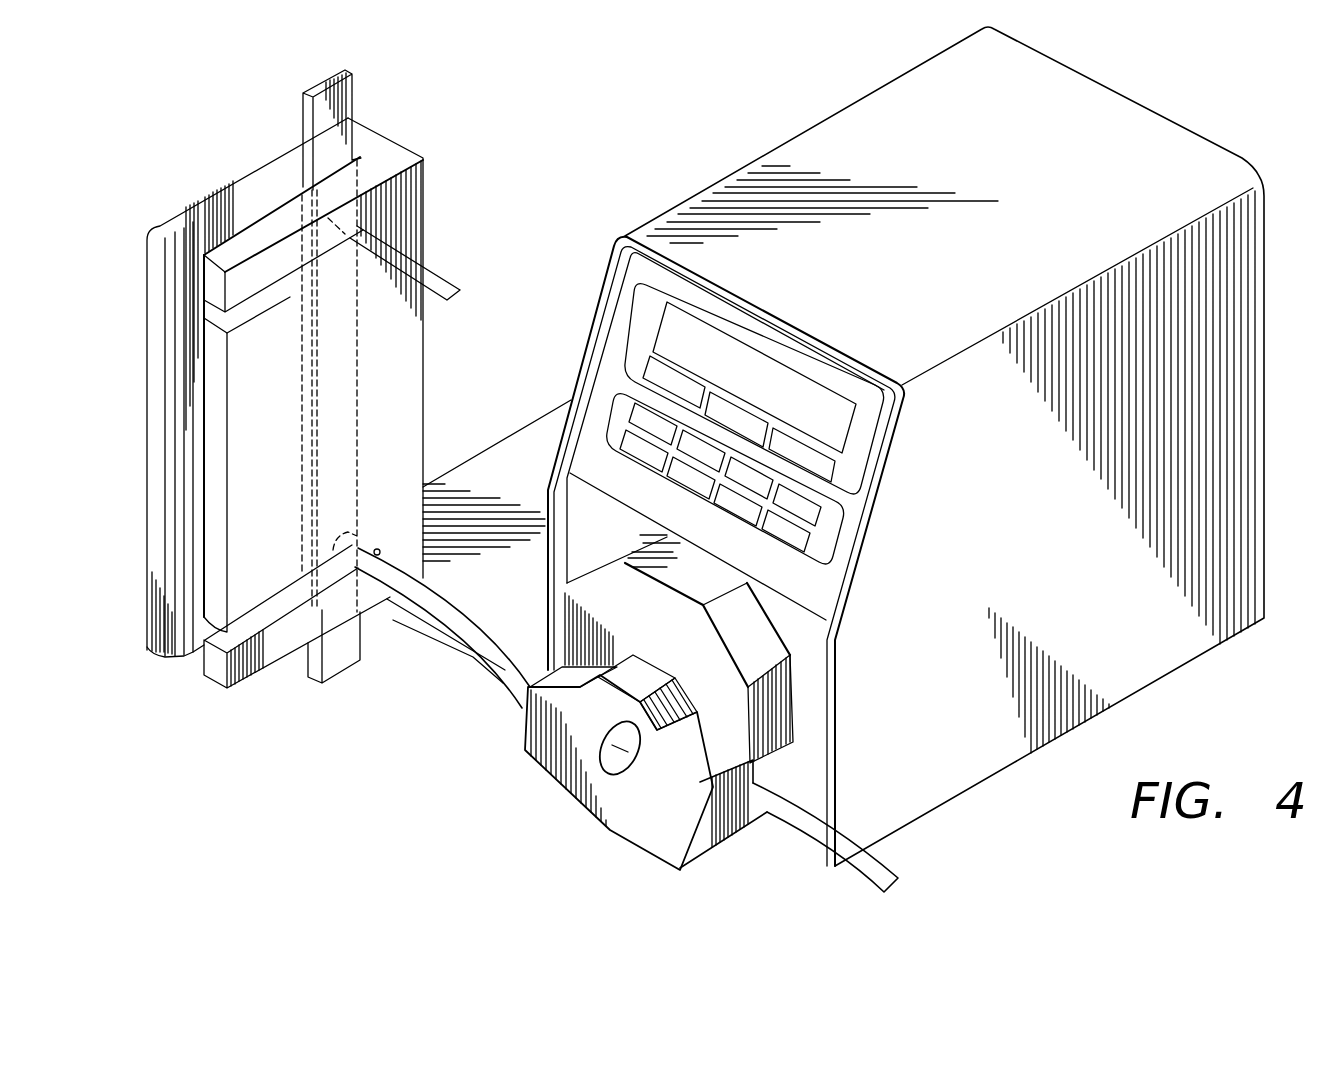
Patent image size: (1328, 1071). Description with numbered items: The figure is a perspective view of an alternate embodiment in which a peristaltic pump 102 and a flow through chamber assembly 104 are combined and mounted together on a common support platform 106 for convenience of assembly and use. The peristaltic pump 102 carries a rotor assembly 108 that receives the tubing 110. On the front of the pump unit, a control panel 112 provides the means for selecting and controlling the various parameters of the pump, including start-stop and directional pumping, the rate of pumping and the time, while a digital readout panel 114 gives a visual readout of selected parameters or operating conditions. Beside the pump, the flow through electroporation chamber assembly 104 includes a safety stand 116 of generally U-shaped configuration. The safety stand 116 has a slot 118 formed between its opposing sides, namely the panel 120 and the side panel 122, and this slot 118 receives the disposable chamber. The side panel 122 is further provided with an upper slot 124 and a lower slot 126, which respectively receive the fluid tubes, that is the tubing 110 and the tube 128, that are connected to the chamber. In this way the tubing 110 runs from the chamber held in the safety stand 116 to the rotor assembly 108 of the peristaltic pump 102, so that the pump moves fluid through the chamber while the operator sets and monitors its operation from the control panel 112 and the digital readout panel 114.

The peristaltic pump 102 is at (784, 124).
The flow through chamber assembly 104 is at (262, 158).
The common support platform 106 is at (537, 437).
The rotor assembly 108 is at (555, 778).
The tubing 110 is at (445, 608).
The control panel 112 is at (828, 535).
The digital readout panel 114 is at (727, 350).
The safety stand 116 is at (425, 358).
The slot 118 is at (245, 215).
The panel 120 is at (155, 424).
The side panel 122 is at (215, 453).
The upper slot 124 is at (263, 300).
The lower slot 126 is at (258, 623).
The tube 128 is at (440, 278).